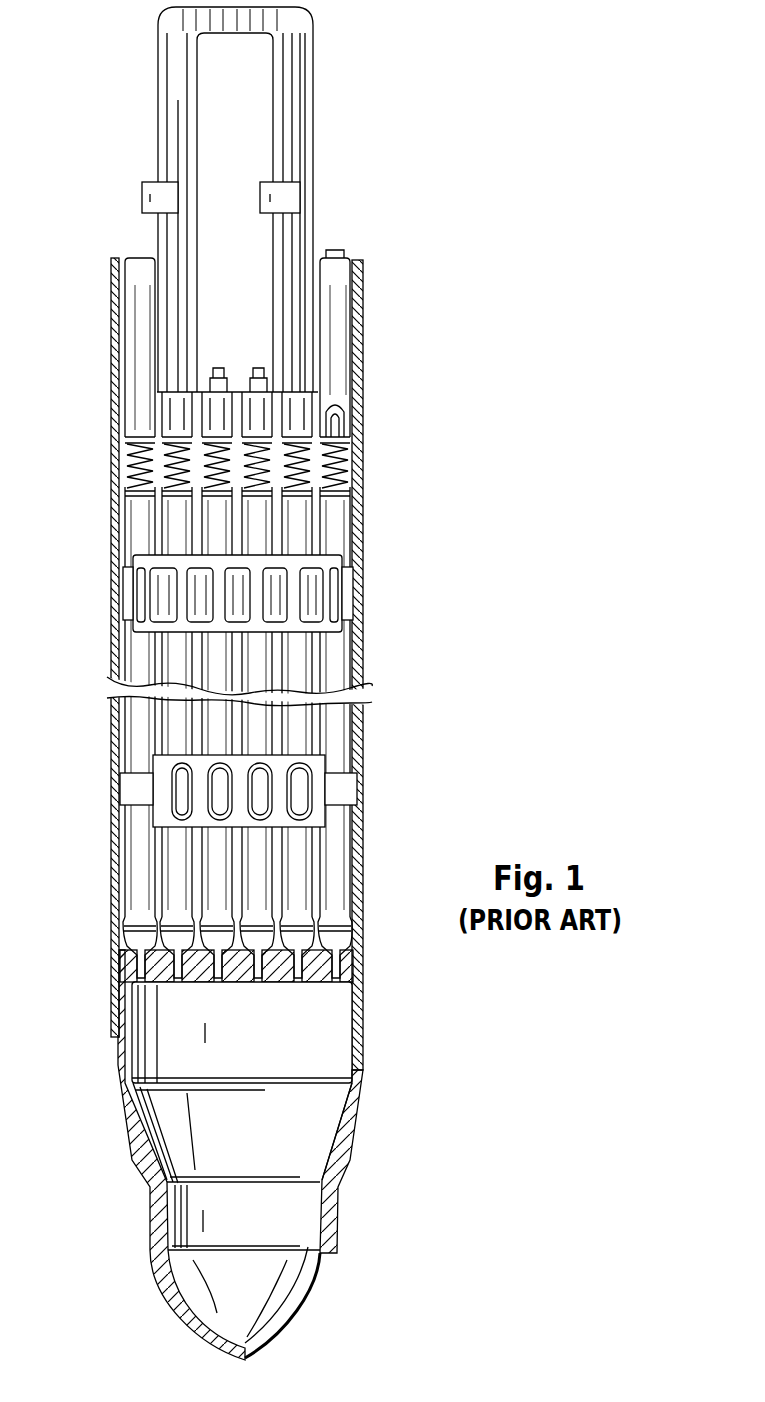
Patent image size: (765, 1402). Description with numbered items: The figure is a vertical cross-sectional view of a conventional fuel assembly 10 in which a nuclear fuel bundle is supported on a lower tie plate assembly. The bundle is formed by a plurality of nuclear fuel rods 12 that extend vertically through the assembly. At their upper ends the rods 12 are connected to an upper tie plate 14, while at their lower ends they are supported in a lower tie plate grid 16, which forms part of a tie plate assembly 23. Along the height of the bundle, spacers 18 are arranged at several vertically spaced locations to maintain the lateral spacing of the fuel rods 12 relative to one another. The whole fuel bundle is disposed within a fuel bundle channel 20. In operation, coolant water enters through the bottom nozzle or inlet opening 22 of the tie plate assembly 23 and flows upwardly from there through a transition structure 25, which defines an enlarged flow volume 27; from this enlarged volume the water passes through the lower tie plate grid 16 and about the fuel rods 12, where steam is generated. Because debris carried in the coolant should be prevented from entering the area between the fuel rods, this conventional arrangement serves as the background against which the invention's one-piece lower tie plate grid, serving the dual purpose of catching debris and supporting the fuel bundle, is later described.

The fuel assembly 10 is at (276, 683).
The nuclear fuel rods 12 is at (330, 520).
The upper tie plate 14 is at (130, 424).
The lower tie plate grid 16 is at (353, 958).
The spacers 18 is at (345, 608).
The fuel bundle channel 20 is at (113, 892).
The bottom nozzle or inlet opening 22 is at (259, 1232).
The tie plate assembly 23 is at (385, 1183).
The transition structure 25 is at (118, 1123).
The enlarged flow volume 27 is at (295, 1050).